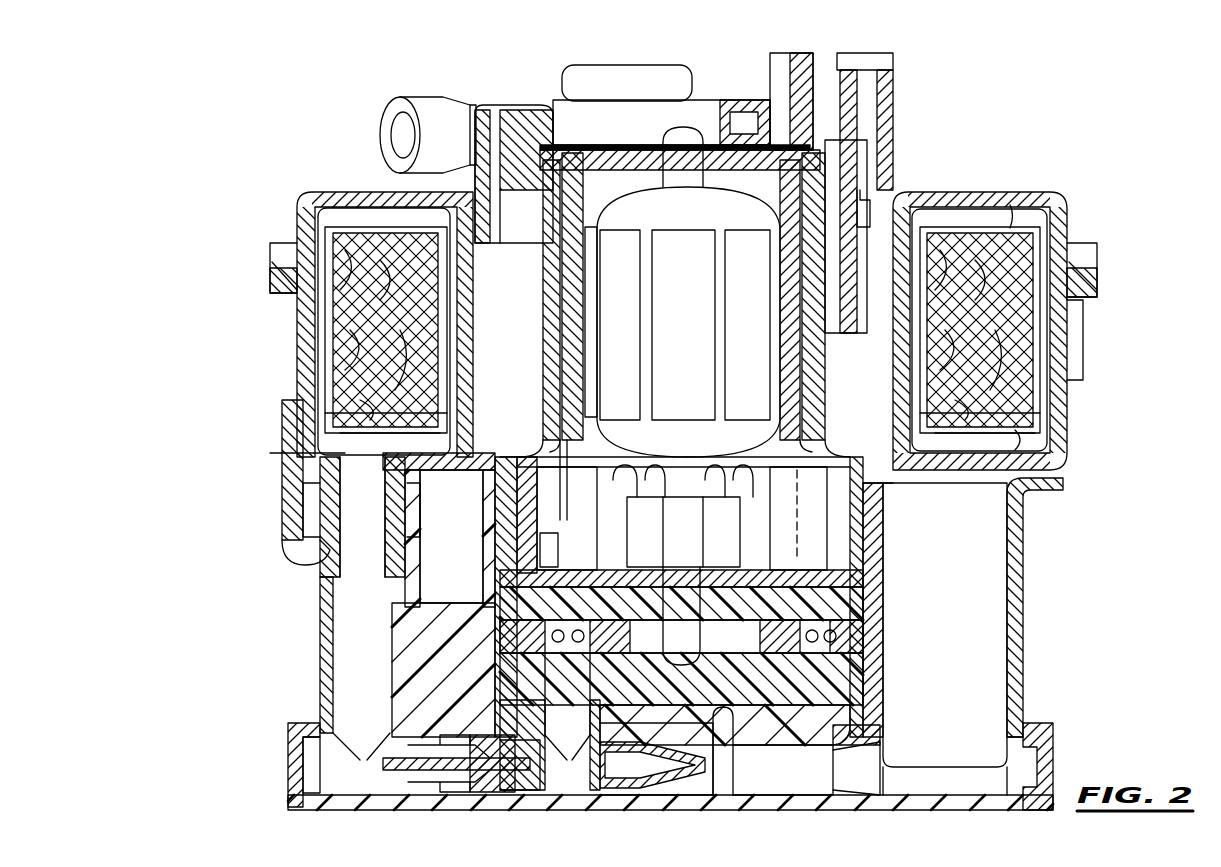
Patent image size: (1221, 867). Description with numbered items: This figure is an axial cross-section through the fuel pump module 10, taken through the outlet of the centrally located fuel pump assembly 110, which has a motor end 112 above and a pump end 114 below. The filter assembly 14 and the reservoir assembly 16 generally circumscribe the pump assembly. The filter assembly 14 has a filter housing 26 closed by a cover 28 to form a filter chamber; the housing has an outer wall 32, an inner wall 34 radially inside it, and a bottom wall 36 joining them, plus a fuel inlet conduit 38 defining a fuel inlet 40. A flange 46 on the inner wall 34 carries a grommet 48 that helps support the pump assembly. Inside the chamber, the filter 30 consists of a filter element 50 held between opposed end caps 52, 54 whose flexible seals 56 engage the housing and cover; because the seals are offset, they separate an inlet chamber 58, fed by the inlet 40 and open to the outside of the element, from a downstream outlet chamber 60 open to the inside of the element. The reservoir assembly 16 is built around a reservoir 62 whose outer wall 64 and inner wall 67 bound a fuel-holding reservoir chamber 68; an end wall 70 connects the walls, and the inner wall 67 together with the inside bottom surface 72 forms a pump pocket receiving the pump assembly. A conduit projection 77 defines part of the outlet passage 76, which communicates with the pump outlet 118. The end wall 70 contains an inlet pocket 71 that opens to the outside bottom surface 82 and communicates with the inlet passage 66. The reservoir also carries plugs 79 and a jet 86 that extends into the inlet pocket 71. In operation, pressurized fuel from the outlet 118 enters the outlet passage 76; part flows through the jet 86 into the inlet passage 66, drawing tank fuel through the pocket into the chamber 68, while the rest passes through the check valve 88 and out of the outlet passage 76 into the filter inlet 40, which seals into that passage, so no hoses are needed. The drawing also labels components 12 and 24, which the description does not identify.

The fuel pump module 10 is at (248, 97).
The valve body 12 is at (352, 142).
The filter assembly 14 is at (255, 358).
The reservoir assembly 16 is at (290, 643).
The electrical connector 24 is at (623, 63).
The filter housing 26 is at (880, 50).
The cover 28 is at (300, 200).
The filter 30 is at (1040, 357).
The outer wall 32 is at (307, 290).
The inner wall 34 is at (473, 323).
The bottom wall 36 is at (337, 457).
The fuel inlet conduit 38 is at (300, 557).
The fuel inlet 40 is at (375, 521).
The flange 46 is at (528, 120).
The grommet 48 is at (518, 127).
The filter element 50 is at (1003, 310).
The end cap 52 is at (1037, 233).
The end cap 54 is at (1037, 423).
The flexible seals 56 is at (1010, 217).
The inlet chamber 58 is at (353, 443).
The outlet chamber 60 is at (973, 222).
The reservoir 62 is at (1027, 593).
The outer wall 64 is at (327, 680).
The inlet passage 66 is at (776, 777).
The inner wall 67 is at (489, 557).
The reservoir chamber 68 is at (953, 611).
The end wall 70 is at (830, 745).
The inlet pocket 71 is at (710, 751).
The inside bottom surface 72 is at (720, 705).
The outlet passage 76 is at (370, 714).
The conduit projection 77 is at (590, 705).
The plugs 79 is at (293, 770).
The outside bottom surface 82 is at (780, 810).
The jet 86 is at (690, 775).
The check valve 88 is at (427, 787).
The fuel pump assembly 110 is at (527, 403).
The motor end 112 is at (713, 140).
The pump end 114 is at (800, 750).
The outlet 118 is at (690, 592).